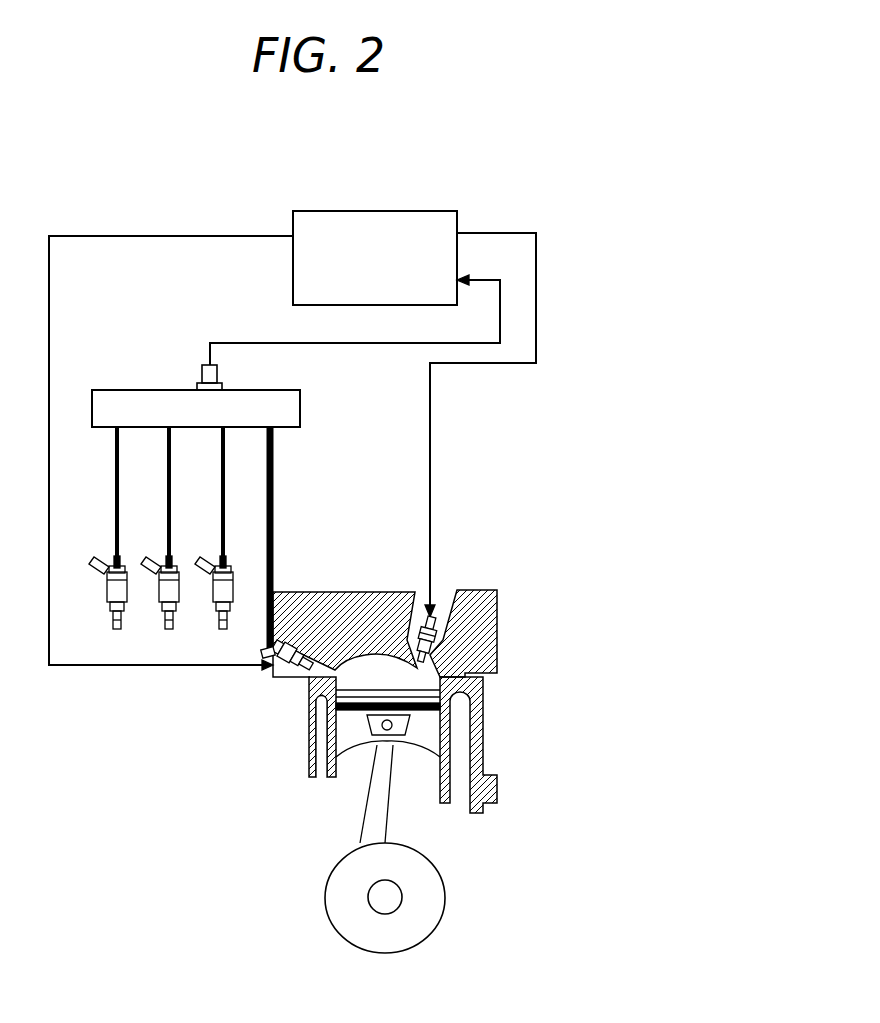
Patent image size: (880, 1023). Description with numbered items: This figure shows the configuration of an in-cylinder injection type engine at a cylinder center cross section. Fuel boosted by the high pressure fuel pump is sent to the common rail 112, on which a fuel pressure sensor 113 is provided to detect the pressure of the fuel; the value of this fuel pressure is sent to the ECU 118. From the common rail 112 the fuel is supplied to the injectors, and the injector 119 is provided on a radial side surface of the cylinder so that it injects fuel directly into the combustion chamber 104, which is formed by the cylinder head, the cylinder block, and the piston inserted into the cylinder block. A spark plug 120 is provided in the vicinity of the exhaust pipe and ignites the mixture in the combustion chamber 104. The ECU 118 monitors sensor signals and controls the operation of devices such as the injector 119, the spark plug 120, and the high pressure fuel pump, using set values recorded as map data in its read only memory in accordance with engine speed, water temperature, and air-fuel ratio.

The combustion chamber 104 is at (320, 716).
The common rail 112 is at (126, 390).
The fuel pressure sensor 113 is at (201, 372).
The ECU 118 is at (455, 211).
The injector 119 is at (302, 679).
The spark plug 120 is at (458, 606).